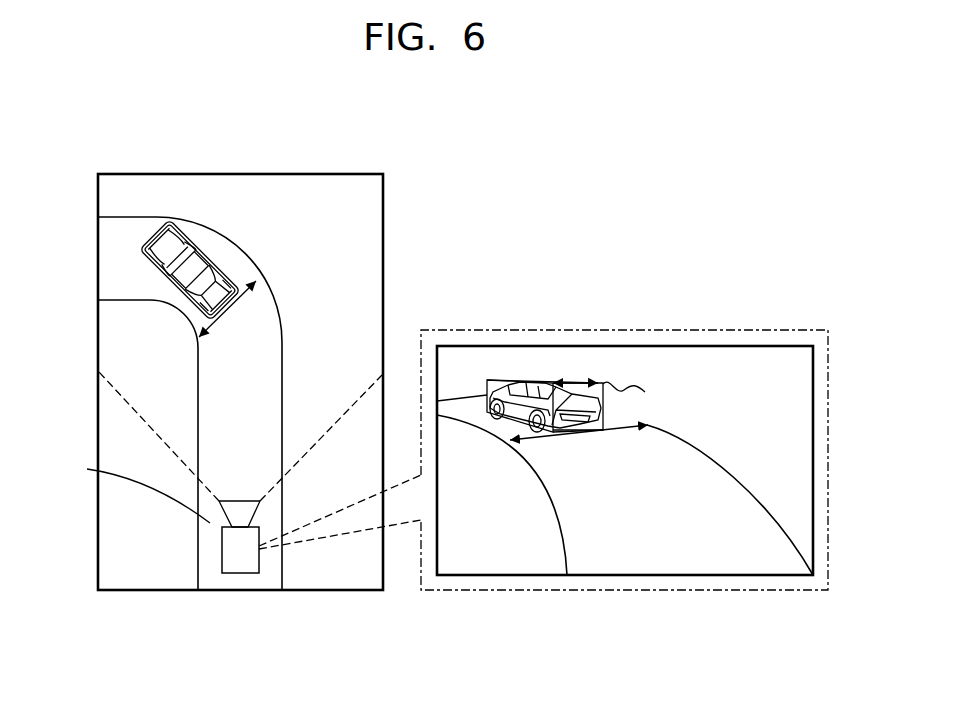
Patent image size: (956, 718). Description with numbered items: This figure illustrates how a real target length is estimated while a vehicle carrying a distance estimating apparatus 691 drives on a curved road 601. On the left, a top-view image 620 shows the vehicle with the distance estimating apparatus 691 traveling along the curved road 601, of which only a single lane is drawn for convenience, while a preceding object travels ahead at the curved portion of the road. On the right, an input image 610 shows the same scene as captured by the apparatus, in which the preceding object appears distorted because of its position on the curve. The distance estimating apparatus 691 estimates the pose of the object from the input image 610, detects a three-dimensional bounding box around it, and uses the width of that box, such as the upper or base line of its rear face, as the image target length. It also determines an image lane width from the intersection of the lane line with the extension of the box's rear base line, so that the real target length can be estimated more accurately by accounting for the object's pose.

The curved road 601 is at (126, 489).
The input image 610 is at (657, 345).
The top-view image 620 is at (320, 174).
The distance estimating apparatus 691 is at (240, 573).